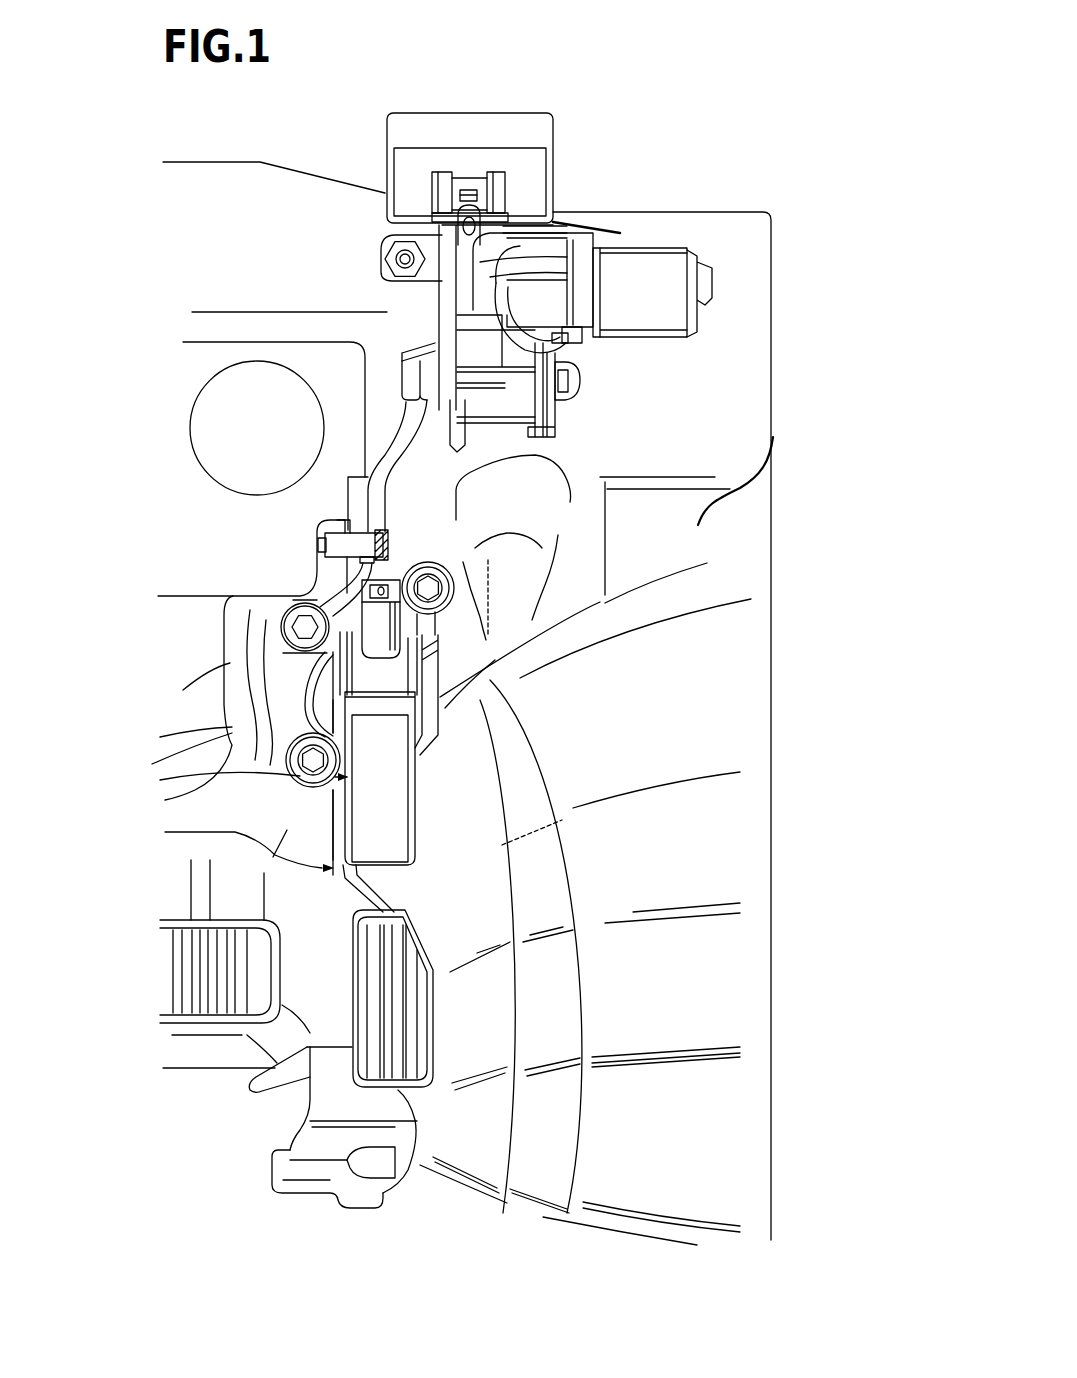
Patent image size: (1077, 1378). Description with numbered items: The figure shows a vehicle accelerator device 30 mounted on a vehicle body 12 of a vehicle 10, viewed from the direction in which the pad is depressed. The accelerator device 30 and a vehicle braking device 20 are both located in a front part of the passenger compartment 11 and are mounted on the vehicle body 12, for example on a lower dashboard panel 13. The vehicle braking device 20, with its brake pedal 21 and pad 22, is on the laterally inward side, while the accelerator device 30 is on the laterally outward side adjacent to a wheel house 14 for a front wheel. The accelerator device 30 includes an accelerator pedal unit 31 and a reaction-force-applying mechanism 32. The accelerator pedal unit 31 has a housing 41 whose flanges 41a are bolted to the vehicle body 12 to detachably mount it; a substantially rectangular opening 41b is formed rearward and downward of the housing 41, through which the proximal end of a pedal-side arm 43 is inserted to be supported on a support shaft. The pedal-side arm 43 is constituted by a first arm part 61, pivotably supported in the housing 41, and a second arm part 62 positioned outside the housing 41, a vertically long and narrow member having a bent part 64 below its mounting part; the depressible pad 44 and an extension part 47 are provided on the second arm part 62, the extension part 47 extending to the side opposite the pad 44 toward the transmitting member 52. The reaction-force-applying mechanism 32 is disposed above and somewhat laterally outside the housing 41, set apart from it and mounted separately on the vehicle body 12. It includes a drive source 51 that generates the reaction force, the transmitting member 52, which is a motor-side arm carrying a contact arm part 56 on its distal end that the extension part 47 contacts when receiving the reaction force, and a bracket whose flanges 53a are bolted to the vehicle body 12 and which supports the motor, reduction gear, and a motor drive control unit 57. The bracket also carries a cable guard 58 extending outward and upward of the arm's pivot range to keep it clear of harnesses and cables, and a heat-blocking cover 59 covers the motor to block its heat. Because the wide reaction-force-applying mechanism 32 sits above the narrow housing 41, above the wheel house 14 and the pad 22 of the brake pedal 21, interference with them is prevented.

The vehicle 10 is at (681, 152).
The passenger compartment 11 is at (173, 1192).
The vehicle body 12 is at (728, 208).
The lower dashboard panel 13 is at (737, 328).
The wheel house 14 is at (738, 860).
The vehicle braking device 20 is at (180, 872).
The brake pedal 21 is at (192, 907).
The pad 22 is at (186, 982).
The vehicle accelerator device 30 is at (845, 465).
The accelerator pedal unit 31 is at (450, 735).
The reaction-force-applying mechanism 32 is at (603, 393).
The housing 41 is at (355, 670).
The flanges 41a is at (342, 628).
The opening 41b is at (368, 700).
The pedal-side arm 43 is at (78, 735).
The pad 44 is at (413, 1021).
The extension part 47 is at (347, 500).
The drive source 51 is at (652, 332).
The transmitting member 52 is at (378, 510).
The flanges 53a is at (385, 240).
The contact arm part 56 is at (337, 542).
The motor drive control unit 57 is at (507, 125).
The cable guard 58 is at (465, 440).
The heat-blocking cover 59 is at (601, 222).
The first arm part 61 is at (340, 808).
The second arm part 62 is at (340, 812).
The bent part 64 is at (357, 893).